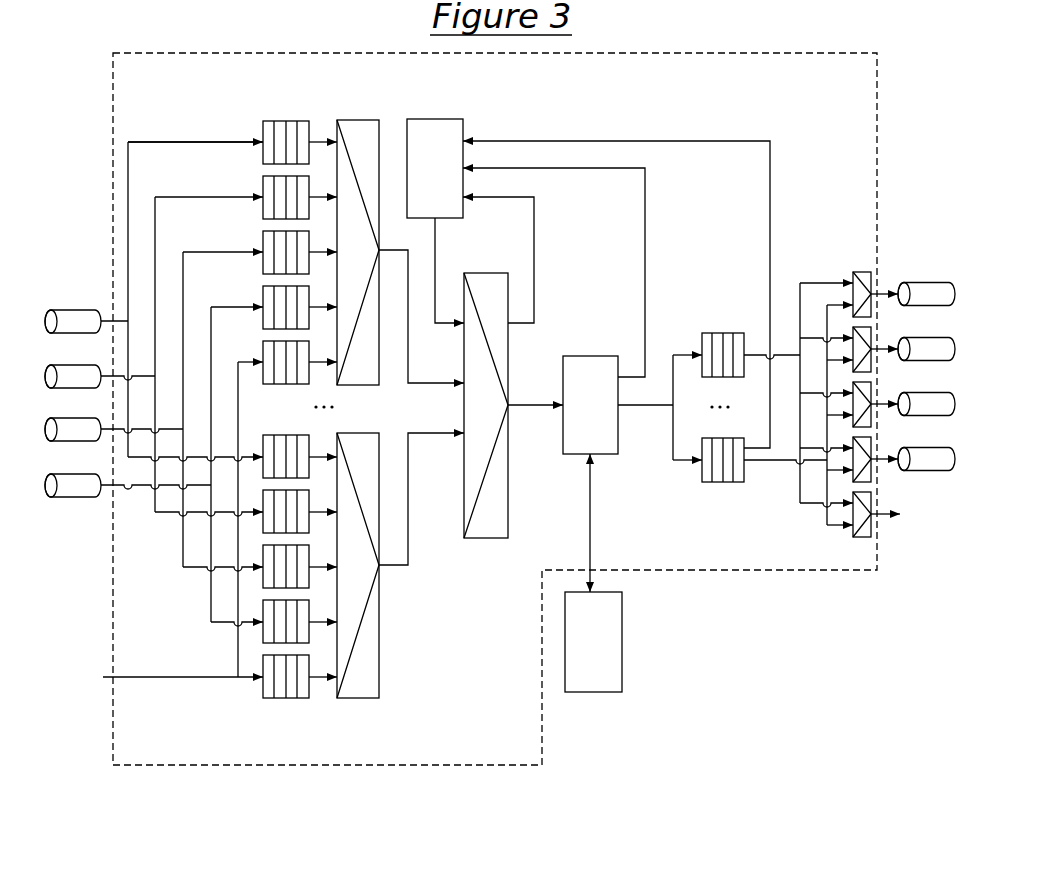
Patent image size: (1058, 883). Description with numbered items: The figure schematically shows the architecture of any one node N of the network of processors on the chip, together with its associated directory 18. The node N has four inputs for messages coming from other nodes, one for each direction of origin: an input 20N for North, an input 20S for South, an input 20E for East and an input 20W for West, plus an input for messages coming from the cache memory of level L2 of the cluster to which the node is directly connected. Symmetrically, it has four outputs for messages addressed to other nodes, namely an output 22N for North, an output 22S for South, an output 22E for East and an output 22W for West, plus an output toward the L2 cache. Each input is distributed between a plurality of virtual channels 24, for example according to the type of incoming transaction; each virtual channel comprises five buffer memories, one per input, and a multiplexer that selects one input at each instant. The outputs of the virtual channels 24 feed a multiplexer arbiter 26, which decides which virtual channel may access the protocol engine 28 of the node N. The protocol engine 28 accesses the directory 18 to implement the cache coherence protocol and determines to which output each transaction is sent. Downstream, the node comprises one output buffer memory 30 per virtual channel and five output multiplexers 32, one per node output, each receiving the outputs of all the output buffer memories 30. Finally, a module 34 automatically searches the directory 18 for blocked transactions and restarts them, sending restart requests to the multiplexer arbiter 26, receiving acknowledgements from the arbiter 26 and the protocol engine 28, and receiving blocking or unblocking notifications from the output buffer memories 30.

The directory 18 is at (577, 654).
The input for the direction North 20N is at (154, 301).
The input for the direction South 20S is at (154, 356).
The input for the direction East 20E is at (154, 411).
The input for the direction West 20W is at (154, 466).
The output for the direction North 22N is at (913, 282).
The output for the direction South 22S is at (913, 337).
The output for the direction East 22E is at (913, 392).
The output for the direction West 22W is at (915, 447).
The virtual channels 24 is at (382, 708).
The multiplexer arbiter 26 is at (487, 539).
The protocol engine 28 is at (574, 416).
The output buffer memories 30 is at (735, 512).
The output multiplexers 32 is at (861, 263).
The module for automatic searching of binary fields 34 is at (419, 179).
The node N is at (732, 570).
The cache memory of level L2 is at (501, 528).